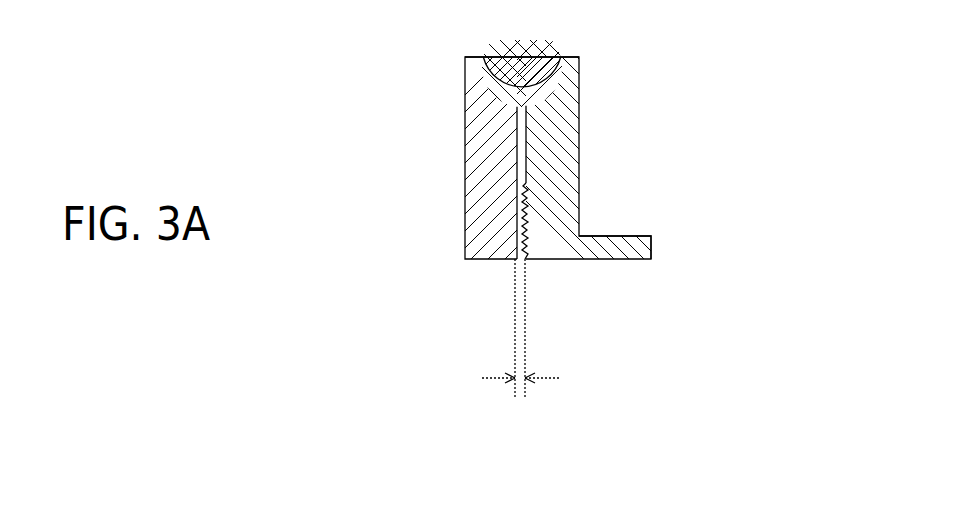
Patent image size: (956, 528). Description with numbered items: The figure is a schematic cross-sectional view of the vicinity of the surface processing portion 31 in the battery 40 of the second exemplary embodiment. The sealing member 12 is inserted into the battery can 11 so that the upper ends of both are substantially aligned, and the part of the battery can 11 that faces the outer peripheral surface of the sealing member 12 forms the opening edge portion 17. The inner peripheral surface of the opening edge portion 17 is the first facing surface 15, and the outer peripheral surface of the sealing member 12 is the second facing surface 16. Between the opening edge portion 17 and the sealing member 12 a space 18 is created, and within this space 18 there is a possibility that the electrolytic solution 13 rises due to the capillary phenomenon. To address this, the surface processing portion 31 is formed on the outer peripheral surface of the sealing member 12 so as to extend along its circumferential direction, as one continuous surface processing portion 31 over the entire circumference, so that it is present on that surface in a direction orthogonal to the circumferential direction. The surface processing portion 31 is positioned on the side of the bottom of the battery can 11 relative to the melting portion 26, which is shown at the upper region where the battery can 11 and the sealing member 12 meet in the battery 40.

The battery can 11 is at (465, 175).
The opening edge portion 17 is at (465, 90).
The sealing member 12 is at (651, 245).
The melting portion 26 is at (508, 68).
The space 18 is at (520, 127).
The surface processing portion 31 is at (525, 200).
The electrolytic solution 13 is at (521, 262).
The first facing surface 15 is at (489, 363).
The second facing surface 16 is at (551, 363).
The battery 40 is at (731, 119).